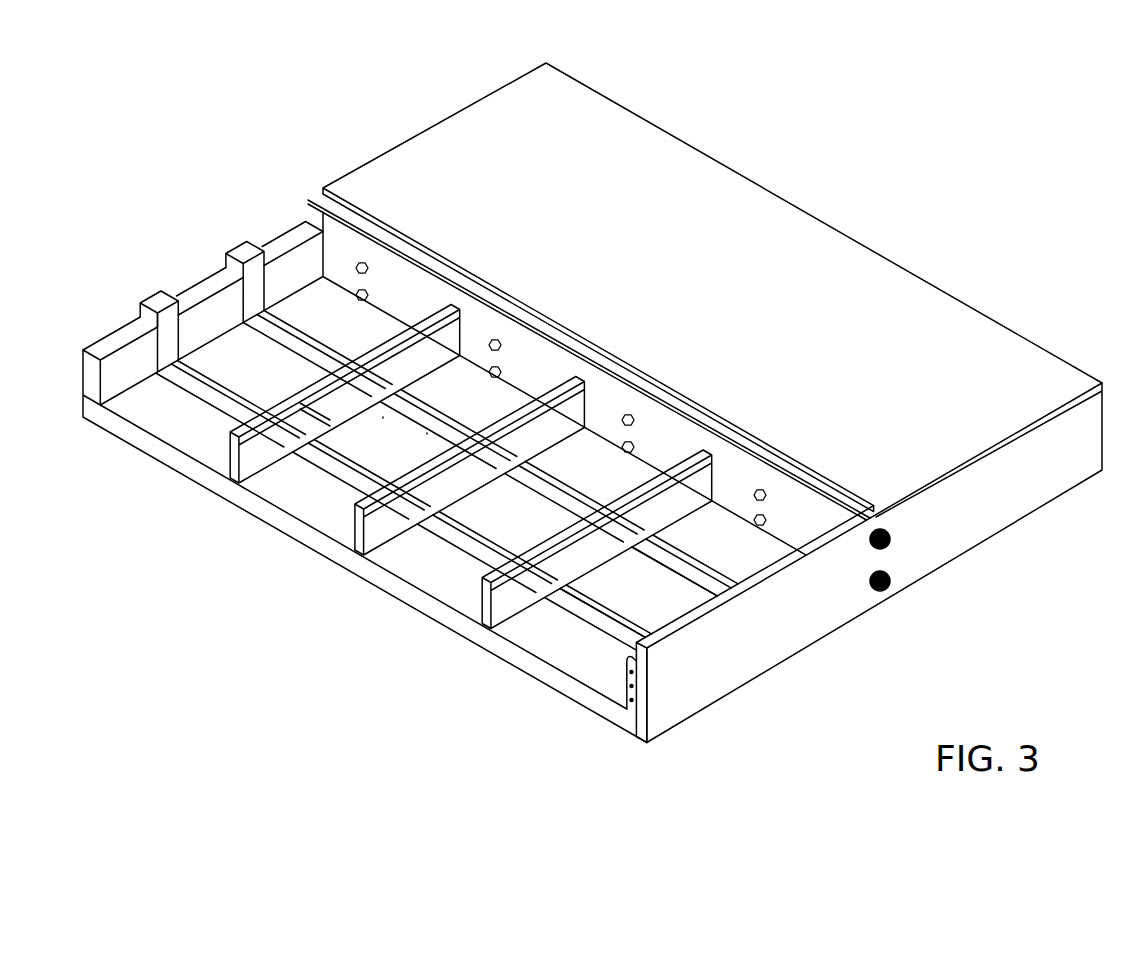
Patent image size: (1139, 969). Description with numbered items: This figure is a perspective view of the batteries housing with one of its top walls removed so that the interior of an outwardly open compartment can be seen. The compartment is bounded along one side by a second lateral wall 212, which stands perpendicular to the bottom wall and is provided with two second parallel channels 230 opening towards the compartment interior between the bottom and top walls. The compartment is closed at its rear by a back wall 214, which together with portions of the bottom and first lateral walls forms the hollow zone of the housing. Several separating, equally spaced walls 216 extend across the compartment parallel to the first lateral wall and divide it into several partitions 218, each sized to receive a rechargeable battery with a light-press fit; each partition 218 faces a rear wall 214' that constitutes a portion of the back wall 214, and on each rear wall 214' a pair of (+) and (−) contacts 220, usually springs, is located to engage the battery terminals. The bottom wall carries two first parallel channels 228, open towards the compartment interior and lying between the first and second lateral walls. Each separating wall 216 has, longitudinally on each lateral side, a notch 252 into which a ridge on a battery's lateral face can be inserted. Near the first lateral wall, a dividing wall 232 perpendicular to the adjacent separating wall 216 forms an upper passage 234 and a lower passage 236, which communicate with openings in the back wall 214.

The second lateral wall 212 is at (130, 367).
The second parallel channels 230 is at (257, 280).
The back wall 214 is at (680, 436).
The rear wall 214' is at (712, 287).
The separating, equally spaced walls 216 is at (225, 472).
The partitions 218 is at (350, 482).
The first parallel channels 228 is at (625, 590).
The (+) and (−) contacts 220 is at (510, 368).
The notch 252 is at (600, 376).
The dividing wall 232 is at (633, 700).
The lower passage 236 is at (628, 712).
The upper passage 234 is at (642, 672).